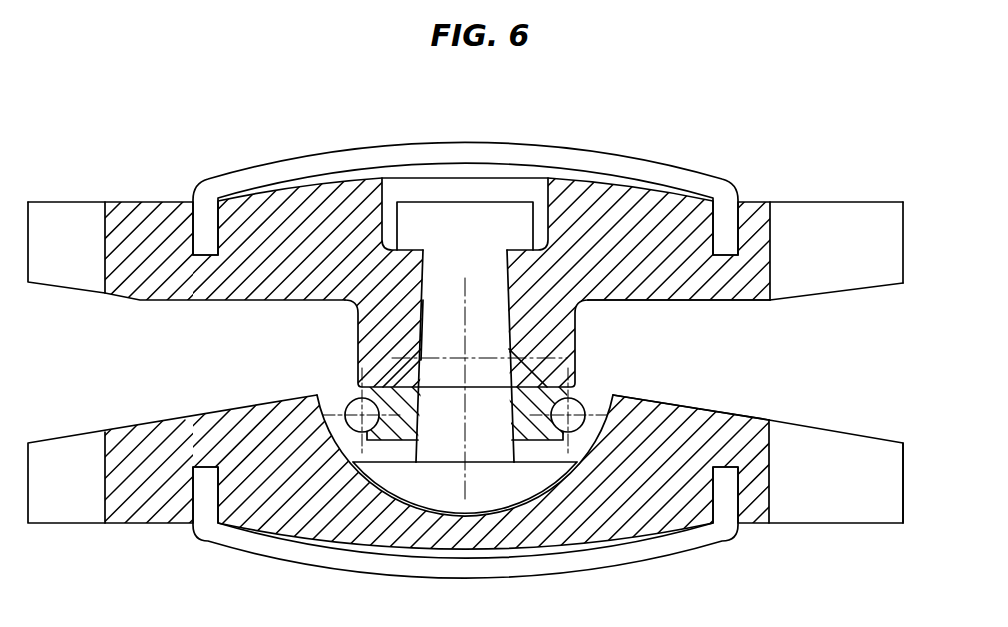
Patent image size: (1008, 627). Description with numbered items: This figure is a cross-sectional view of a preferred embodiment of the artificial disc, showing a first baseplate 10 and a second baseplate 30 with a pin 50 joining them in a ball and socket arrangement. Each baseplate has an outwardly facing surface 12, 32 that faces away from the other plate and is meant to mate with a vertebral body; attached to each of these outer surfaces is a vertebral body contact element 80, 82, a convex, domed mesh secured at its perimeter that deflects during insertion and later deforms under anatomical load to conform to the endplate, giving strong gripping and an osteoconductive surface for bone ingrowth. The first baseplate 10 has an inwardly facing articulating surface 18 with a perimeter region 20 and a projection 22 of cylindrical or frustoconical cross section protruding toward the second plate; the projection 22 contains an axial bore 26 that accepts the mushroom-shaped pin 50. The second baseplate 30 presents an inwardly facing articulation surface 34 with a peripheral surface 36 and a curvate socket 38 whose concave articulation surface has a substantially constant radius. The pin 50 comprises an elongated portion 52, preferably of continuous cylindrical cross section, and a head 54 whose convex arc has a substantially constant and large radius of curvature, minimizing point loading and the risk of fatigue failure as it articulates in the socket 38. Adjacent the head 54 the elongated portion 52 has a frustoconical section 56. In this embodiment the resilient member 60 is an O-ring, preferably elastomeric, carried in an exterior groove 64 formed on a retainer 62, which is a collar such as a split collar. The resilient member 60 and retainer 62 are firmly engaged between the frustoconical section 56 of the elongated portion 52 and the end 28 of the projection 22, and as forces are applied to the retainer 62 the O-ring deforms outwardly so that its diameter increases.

The first baseplate 10 is at (789, 211).
The outwardly facing surface 12 is at (848, 202).
The inwardly facing articulating surface 18 is at (580, 304).
The perimeter region 20 is at (760, 301).
The projection 22 is at (385, 372).
The axial bore 26 is at (508, 300).
The end of projection 28 is at (538, 388).
The second baseplate 30 is at (800, 510).
The outwardly facing surface 32 is at (850, 524).
The inwardly facing articulation surface 34 is at (667, 398).
The peripheral surface 36 is at (752, 418).
The curvate socket 38 is at (610, 400).
The pin 50 is at (428, 292).
The elongated portion 52 is at (427, 331).
The head 54 is at (362, 469).
The frustoconical section 56 is at (487, 450).
The resilient member 60 is at (348, 401).
The retainer 62 is at (393, 442).
The exterior groove 64 is at (580, 397).
The vertebral body contact element 80 is at (624, 161).
The vertebral body contact element 82 is at (602, 576).